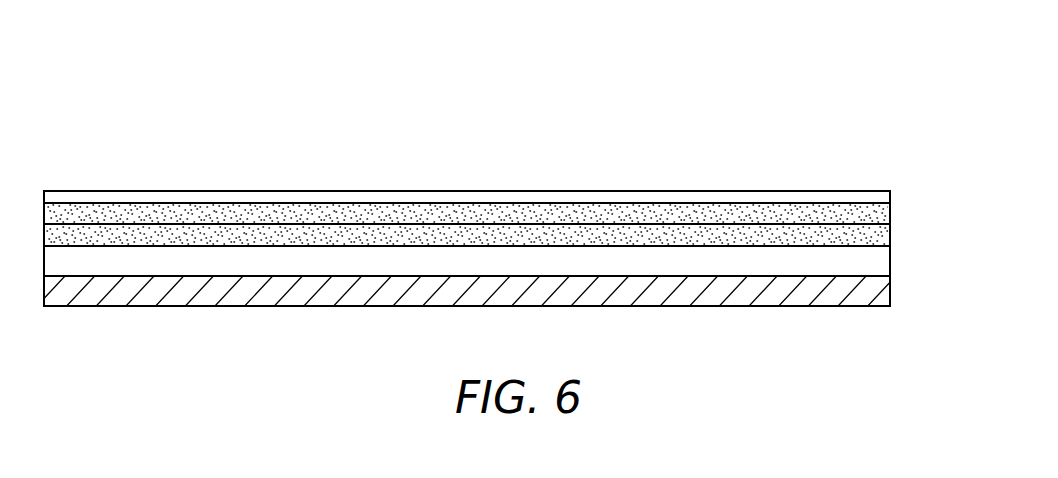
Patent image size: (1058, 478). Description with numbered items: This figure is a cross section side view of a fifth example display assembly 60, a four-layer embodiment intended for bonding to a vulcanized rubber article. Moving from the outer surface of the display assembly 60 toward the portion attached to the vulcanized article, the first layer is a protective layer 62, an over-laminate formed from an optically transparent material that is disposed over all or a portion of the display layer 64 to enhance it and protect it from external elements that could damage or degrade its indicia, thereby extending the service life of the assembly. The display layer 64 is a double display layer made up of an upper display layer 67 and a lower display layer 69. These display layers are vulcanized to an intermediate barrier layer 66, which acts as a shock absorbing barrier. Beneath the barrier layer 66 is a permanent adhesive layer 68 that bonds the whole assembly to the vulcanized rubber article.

The display assembly 60 is at (793, 166).
The protective layer 62 is at (573, 198).
The display layer 64 is at (900, 200).
The intermediate barrier layer 66 is at (840, 260).
The upper display layer 67 is at (675, 212).
The permanent adhesive layer 68 is at (747, 290).
The lower display layer 69 is at (702, 235).